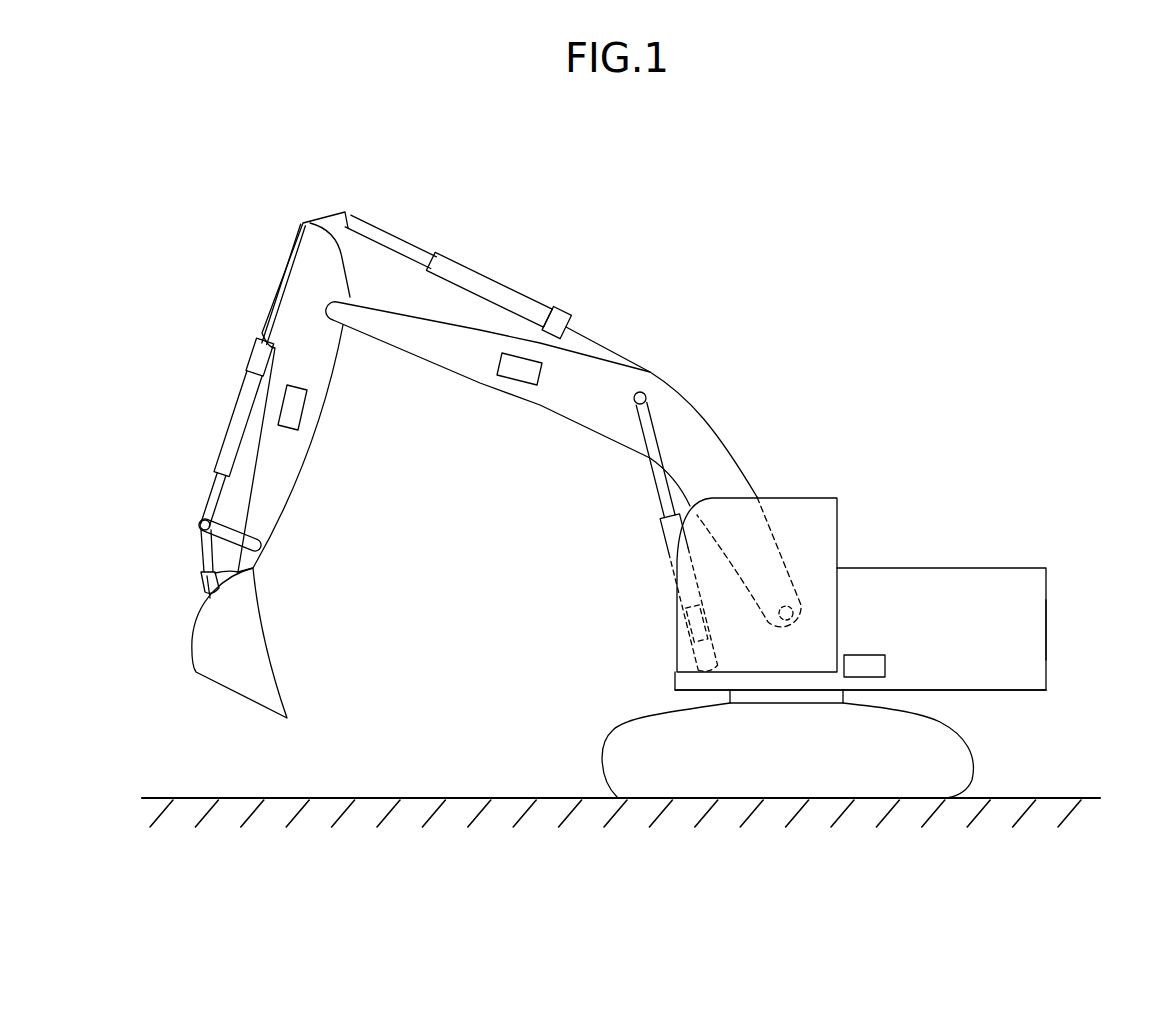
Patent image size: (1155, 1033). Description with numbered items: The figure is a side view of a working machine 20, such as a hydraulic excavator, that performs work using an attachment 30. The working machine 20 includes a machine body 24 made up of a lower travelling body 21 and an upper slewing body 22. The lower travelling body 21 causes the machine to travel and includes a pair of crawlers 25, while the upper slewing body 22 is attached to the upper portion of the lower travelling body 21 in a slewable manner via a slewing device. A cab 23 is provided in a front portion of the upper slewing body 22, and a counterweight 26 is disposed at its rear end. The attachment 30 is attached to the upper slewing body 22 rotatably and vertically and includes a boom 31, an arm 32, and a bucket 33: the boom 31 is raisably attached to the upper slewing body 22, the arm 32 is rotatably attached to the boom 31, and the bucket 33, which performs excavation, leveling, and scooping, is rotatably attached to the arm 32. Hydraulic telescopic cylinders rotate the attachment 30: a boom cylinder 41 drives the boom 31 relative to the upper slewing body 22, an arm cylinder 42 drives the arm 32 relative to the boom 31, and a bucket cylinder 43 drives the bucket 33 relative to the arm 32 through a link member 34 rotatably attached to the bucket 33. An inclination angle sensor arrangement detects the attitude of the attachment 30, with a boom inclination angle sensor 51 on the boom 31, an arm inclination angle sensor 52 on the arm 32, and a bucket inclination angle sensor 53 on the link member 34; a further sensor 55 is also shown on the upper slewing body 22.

The working machine 20 is at (968, 466).
The lower travelling body 21 is at (923, 772).
The upper slewing body 22 is at (978, 587).
The cab 23 is at (670, 652).
The machine body 24 is at (1080, 703).
The crawlers 25 is at (597, 762).
The counterweight 26 is at (1033, 628).
The attachment 30 is at (730, 381).
The boom 31 is at (478, 392).
The arm 32 is at (290, 463).
The bucket 33 is at (230, 677).
The link member 34 is at (207, 553).
The boom cylinder 41 is at (672, 530).
The arm cylinder 42 is at (495, 292).
The bucket cylinder 43 is at (243, 413).
The boom inclination angle sensor 51 is at (518, 373).
The arm inclination angle sensor 52 is at (298, 408).
The bucket inclination angle sensor 53 is at (230, 518).
The body inclination sensor 55 is at (863, 677).